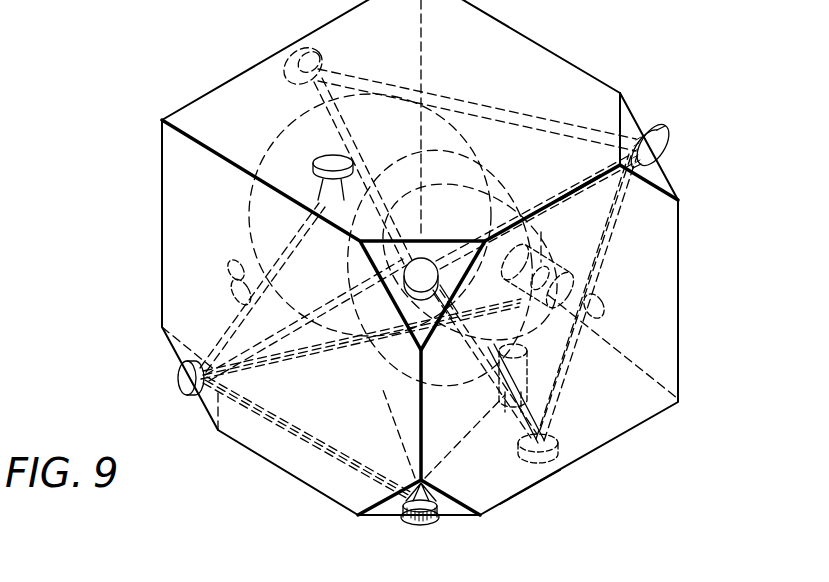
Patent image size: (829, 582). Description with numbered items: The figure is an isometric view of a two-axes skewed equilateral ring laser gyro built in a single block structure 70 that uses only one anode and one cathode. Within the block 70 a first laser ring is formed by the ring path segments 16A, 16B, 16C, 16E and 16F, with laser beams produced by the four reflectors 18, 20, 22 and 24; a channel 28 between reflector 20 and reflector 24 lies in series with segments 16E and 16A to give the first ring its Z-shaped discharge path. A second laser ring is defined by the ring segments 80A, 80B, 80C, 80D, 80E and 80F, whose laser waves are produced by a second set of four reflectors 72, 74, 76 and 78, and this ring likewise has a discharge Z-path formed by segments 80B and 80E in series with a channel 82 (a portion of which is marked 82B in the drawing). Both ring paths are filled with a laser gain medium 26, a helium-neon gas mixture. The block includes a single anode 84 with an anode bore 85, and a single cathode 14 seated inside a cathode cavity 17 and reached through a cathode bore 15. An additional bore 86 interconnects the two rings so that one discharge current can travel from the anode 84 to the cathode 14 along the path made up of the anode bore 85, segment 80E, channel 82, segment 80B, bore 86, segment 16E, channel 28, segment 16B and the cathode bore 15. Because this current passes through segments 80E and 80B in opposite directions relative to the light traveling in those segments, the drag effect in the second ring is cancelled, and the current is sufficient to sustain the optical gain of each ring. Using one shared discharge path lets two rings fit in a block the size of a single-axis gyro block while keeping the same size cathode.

The cathode 14 is at (361, 339).
The cathode bore 15 is at (600, 278).
The ring path segment 16A is at (506, 108).
The ring path segment 16B is at (617, 240).
The ring path segment 16C is at (572, 382).
The ring path segment 16E is at (416, 194).
The ring path segment 16F is at (350, 123).
The cathode cavity 17 is at (245, 203).
The reflector 18 is at (300, 55).
The reflector 20 is at (658, 148).
The reflector 22 is at (566, 464).
The reflector 24 is at (425, 268).
The laser gain medium 26 is at (554, 193).
The channel 28 is at (570, 183).
The single block structure 70 is at (128, 248).
The reflector 72 is at (330, 154).
The reflector 74 is at (178, 380).
The reflector 76 is at (570, 262).
The reflector 78 is at (432, 522).
The ring segment 80A is at (304, 356).
The ring segment 80B is at (234, 302).
The ring segment 80C is at (452, 212).
The ring segment 80D is at (262, 287).
The ring segment 80E is at (463, 384).
The ring segment 80F is at (612, 346).
The channel 82 is at (333, 469).
The shaft portion 82B is at (384, 449).
The anode 84 is at (515, 448).
The anode bore 85 is at (528, 362).
The additional bore 86 is at (232, 264).